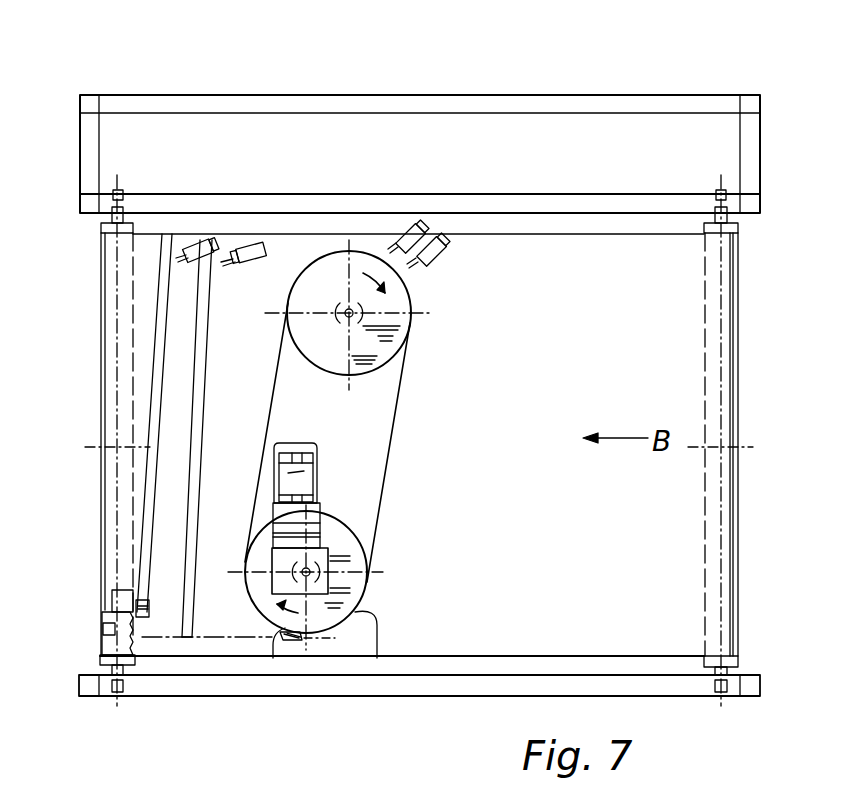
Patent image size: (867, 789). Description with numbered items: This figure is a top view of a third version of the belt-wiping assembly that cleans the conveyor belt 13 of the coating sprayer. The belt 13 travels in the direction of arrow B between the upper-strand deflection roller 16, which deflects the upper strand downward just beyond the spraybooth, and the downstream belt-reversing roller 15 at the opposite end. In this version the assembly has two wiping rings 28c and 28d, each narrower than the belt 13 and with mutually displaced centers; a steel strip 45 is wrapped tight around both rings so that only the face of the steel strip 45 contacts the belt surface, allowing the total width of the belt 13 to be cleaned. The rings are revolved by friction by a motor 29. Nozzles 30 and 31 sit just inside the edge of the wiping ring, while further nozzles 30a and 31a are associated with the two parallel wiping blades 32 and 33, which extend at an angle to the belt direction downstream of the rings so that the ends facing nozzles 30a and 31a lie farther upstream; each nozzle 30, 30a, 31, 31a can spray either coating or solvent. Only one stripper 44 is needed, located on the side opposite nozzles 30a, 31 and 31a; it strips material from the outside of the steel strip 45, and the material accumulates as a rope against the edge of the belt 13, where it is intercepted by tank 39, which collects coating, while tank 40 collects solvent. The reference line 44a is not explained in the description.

The belt 13 is at (643, 235).
The downstream belt-reversing roller 15 is at (110, 460).
The upper-strand deflection roller 16 is at (728, 302).
The wiping ring 28c is at (363, 251).
The wiping ring 28d is at (366, 620).
The motor 29 is at (302, 444).
The nozzle 30 is at (412, 237).
The nozzle 30a is at (198, 243).
The nozzle 31 is at (434, 240).
The nozzle 31a is at (252, 240).
The wiping blade 32 is at (202, 400).
The wiping blade 33 is at (158, 312).
The tank 39 is at (123, 640).
The tank 40 is at (120, 603).
The stripper 44 is at (290, 642).
The guide line 44a is at (232, 637).
The steel strip 45 is at (393, 433).